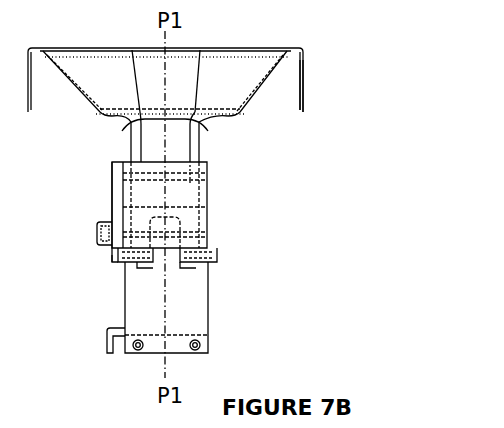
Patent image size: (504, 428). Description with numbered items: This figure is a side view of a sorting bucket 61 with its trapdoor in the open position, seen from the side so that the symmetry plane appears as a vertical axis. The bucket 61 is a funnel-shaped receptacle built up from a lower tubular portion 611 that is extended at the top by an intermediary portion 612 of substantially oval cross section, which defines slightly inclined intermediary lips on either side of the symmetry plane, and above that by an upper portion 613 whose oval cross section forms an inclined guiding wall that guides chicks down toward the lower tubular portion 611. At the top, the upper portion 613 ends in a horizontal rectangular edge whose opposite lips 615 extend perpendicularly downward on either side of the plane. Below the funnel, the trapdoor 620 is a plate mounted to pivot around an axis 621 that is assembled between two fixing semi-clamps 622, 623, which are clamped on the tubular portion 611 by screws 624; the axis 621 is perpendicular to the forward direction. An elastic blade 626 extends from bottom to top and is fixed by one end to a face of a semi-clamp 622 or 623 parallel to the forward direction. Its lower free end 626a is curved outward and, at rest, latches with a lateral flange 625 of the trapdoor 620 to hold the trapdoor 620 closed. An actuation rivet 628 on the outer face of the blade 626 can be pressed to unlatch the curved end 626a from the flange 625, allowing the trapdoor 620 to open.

The sorting bucket 61 is at (104, 46).
The lower tubular portion 611 is at (128, 162).
The intermediary portion 612 is at (101, 114).
The upper portion 613 is at (245, 109).
The lip 615 is at (303, 76).
The trapdoor 620 is at (128, 312).
The pivoting axis 621 is at (216, 256).
The fixing semi-clamp 622 is at (130, 198).
The fixing semi-clamp 623 is at (200, 210).
The screw 624 is at (200, 178).
The lateral flange 625 is at (107, 345).
The elastic blade 626 is at (112, 213).
The lower free end 626a is at (112, 262).
The actuation rivet 628 is at (100, 235).